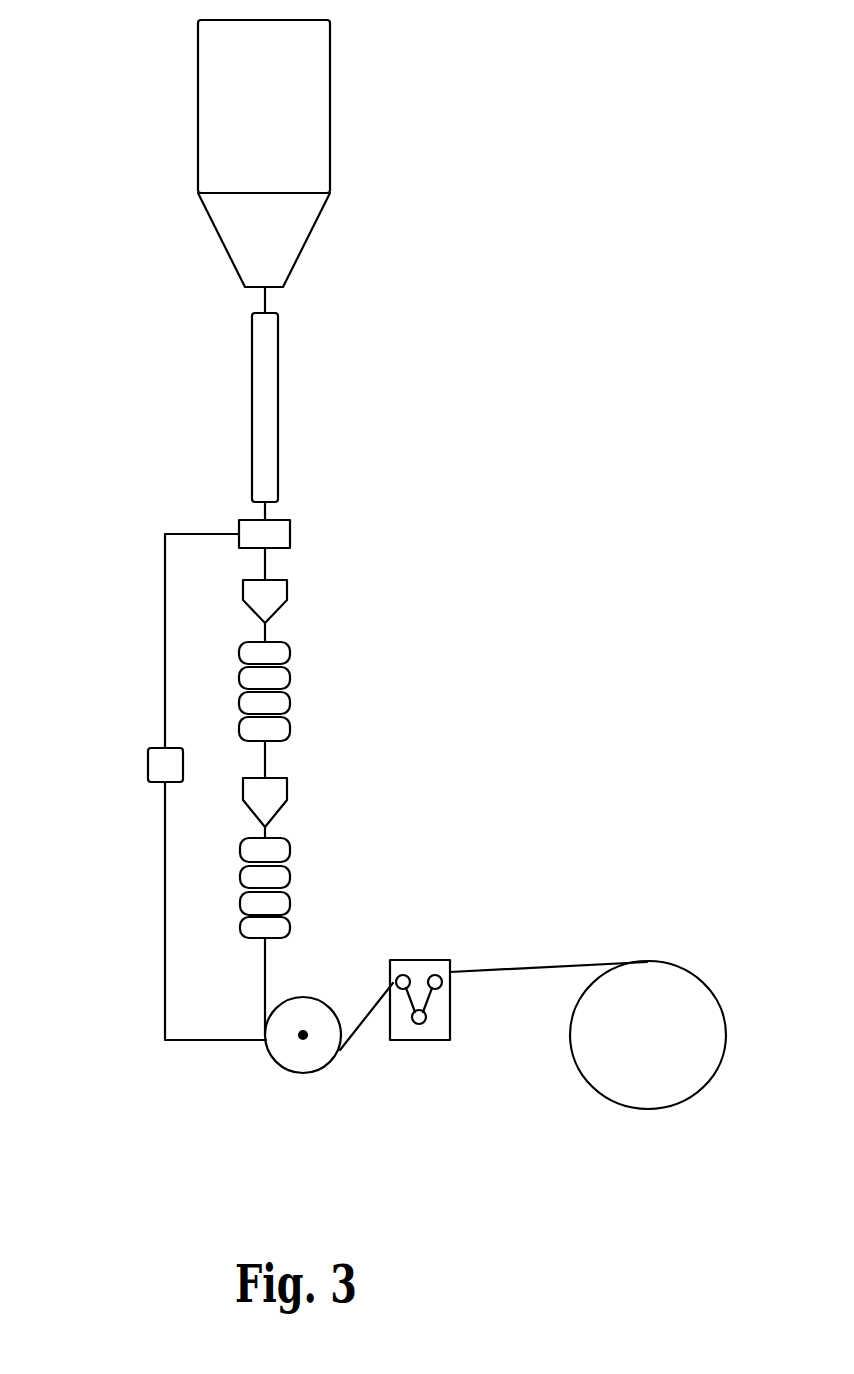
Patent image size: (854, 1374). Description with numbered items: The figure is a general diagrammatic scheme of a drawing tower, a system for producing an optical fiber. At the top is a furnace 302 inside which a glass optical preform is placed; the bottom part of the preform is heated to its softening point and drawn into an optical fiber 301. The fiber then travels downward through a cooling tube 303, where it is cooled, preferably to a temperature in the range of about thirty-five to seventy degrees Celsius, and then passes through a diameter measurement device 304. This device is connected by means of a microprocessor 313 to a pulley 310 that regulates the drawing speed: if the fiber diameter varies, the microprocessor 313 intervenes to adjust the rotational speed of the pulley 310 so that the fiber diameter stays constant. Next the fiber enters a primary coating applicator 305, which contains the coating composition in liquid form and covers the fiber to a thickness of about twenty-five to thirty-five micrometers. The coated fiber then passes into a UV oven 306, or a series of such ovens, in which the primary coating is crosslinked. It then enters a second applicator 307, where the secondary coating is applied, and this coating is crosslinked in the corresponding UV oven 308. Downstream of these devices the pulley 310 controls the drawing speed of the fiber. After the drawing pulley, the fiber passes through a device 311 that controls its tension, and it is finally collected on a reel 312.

The optical fiber 301 is at (268, 303).
The furnace 302 is at (313, 163).
The cooling tube 303 is at (267, 425).
The diameter measurement device 304 is at (273, 535).
The primary coating applicator 305 is at (268, 597).
The UV oven 306 is at (278, 729).
The second applicator 307 is at (272, 793).
The UV oven 308 is at (278, 852).
The pulley 310 is at (282, 1047).
The tension control device 311 is at (432, 962).
The reel 312 is at (655, 990).
The microprocessor 313 is at (160, 767).